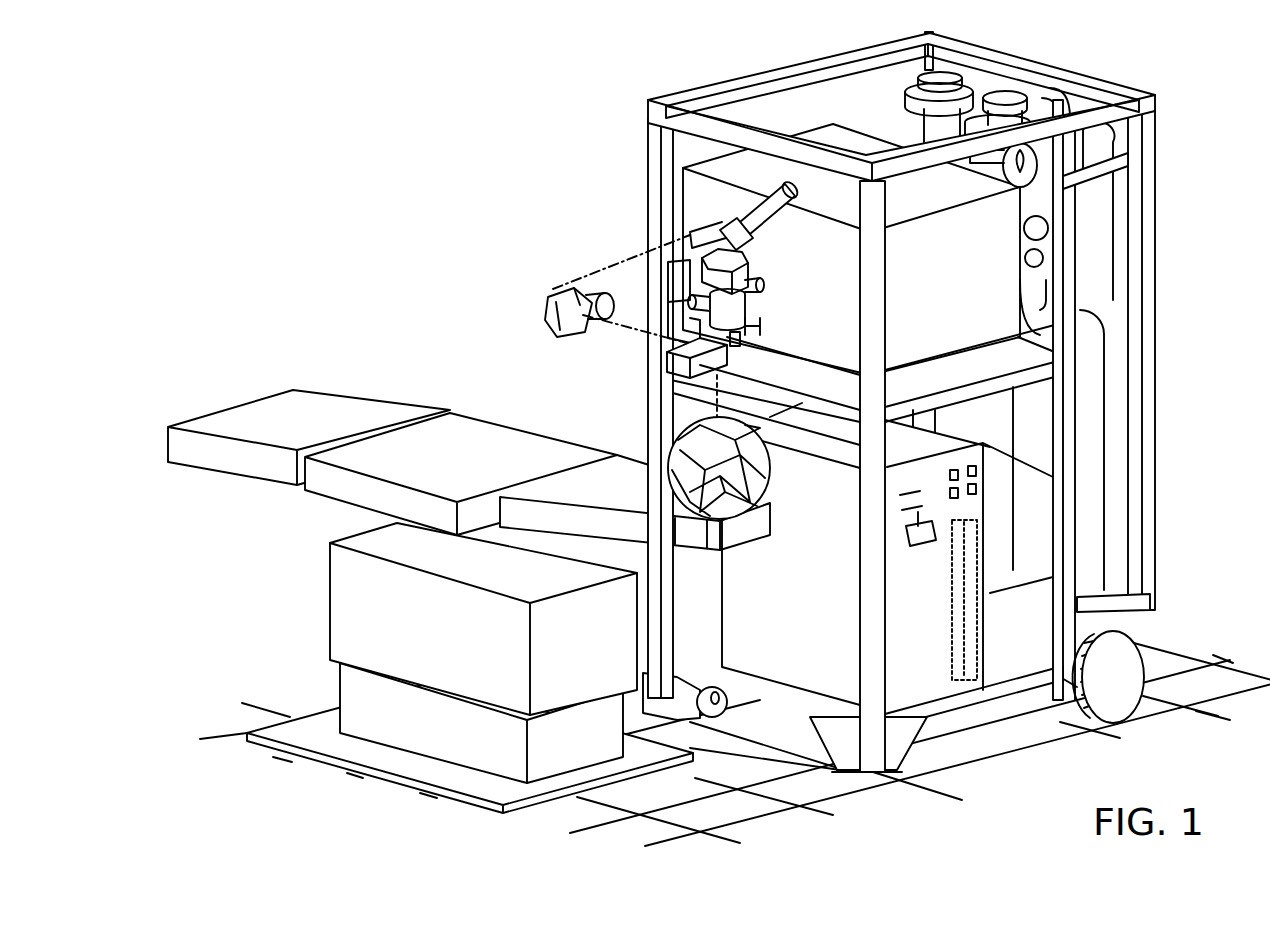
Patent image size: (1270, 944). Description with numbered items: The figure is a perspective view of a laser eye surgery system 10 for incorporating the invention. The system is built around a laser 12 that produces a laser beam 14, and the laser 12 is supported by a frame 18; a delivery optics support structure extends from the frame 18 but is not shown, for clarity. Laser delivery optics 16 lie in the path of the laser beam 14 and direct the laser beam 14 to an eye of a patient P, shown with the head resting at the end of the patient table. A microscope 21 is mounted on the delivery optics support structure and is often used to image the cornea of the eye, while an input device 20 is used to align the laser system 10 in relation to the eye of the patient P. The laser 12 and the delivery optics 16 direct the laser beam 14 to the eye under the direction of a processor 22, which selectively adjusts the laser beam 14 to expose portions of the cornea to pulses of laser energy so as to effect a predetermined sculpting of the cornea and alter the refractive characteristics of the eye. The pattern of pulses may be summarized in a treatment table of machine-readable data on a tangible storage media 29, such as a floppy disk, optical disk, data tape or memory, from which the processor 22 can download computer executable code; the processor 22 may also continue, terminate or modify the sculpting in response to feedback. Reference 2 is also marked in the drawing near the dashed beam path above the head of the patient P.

The laser eye surgery system 10 is at (661, 416).
The laser 12 is at (876, 415).
The laser beam 14 is at (620, 262).
The laser delivery optics 16 is at (672, 342).
The frame 18 is at (765, 90).
The input device 20 is at (722, 378).
The microscope 21 is at (750, 252).
The processor 22 is at (990, 716).
The tangible storage media 29 is at (913, 546).
The treatment beam 2 is at (722, 418).
The patient P is at (766, 474).